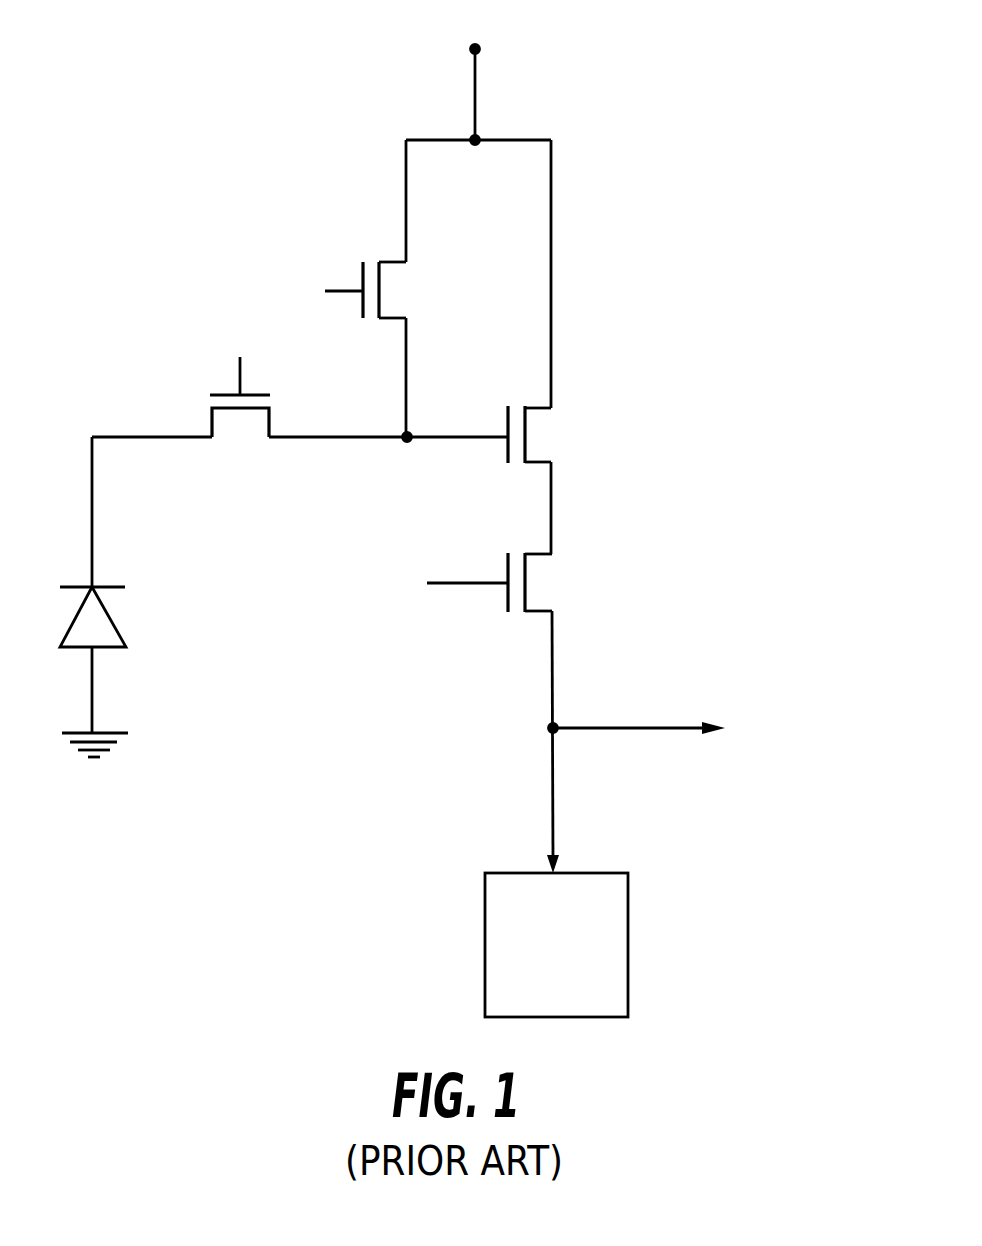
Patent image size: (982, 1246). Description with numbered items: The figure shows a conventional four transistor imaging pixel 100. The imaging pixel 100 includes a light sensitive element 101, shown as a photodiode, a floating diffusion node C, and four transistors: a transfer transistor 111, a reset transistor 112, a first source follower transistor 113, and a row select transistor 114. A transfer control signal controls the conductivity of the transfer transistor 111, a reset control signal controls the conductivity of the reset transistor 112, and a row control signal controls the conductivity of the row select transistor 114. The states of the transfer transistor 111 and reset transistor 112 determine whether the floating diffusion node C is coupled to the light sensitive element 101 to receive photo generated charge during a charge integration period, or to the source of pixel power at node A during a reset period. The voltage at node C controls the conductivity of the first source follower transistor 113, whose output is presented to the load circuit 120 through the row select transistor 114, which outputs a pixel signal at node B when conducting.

The imaging pixel 100 is at (217, 123).
The light sensitive element 101 is at (94, 628).
The transfer transistor 111 is at (212, 428).
The reset transistor 112 is at (397, 260).
The first source follower transistor 113 is at (540, 405).
The row select transistor 114 is at (534, 552).
The load circuit 120 is at (580, 999).